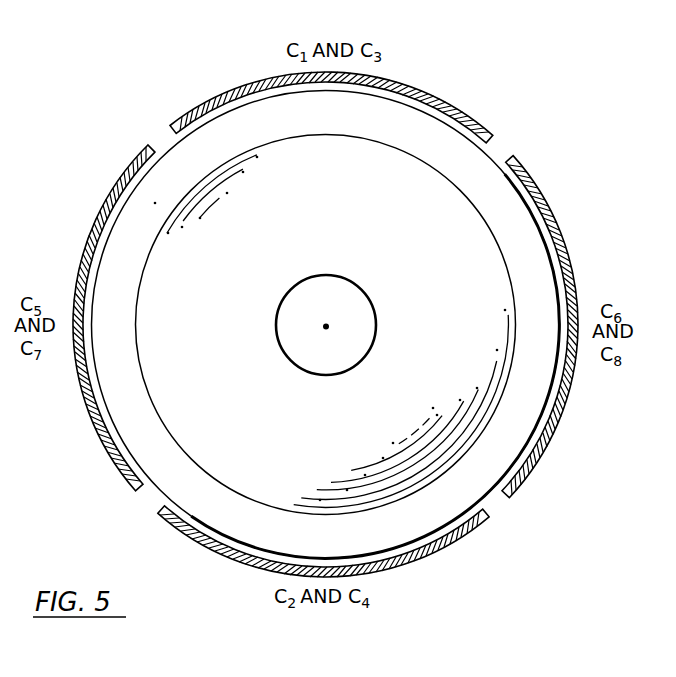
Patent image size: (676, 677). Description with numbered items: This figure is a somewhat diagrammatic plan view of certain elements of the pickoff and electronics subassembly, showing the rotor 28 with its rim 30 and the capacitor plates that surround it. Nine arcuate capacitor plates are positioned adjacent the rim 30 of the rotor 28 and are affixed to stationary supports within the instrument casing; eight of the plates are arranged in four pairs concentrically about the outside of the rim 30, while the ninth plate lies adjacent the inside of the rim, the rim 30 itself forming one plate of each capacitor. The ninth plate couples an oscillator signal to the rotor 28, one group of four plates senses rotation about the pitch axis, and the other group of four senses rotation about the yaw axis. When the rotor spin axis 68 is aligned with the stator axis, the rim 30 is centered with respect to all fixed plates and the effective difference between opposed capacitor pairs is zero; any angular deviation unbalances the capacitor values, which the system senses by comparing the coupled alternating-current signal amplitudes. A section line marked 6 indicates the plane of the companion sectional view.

The section line of FIG. 6 is at (329, 35).
The rotor 28 is at (178, 257).
The rim 30 is at (472, 166).
The rotor spin axis 68 is at (326, 326).